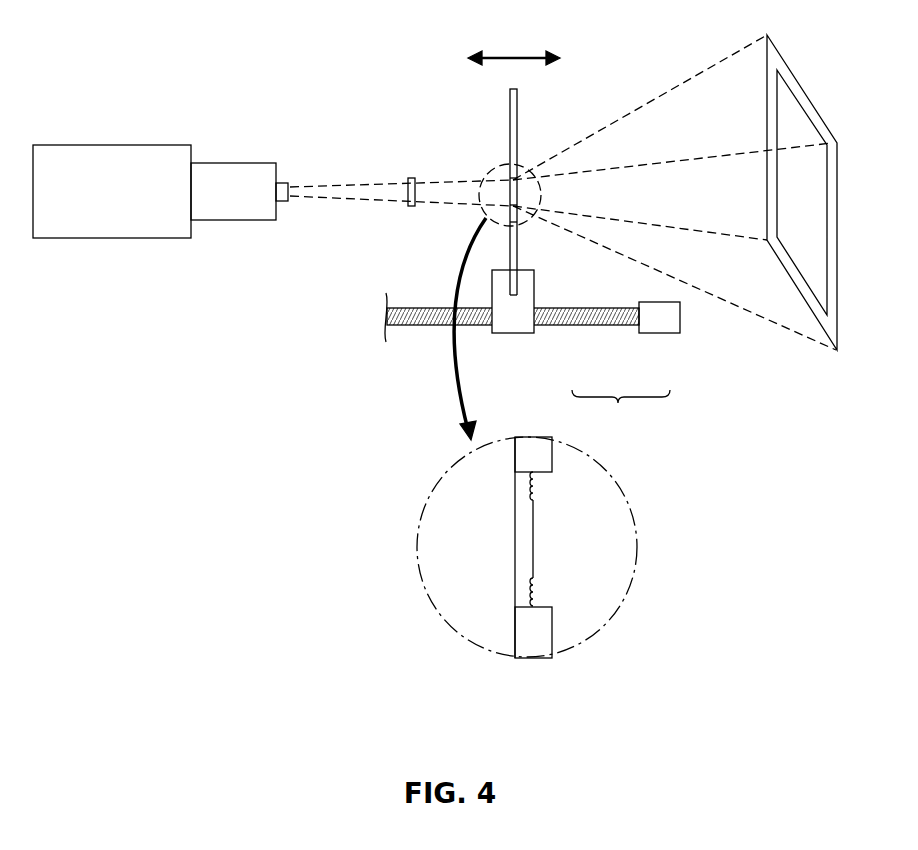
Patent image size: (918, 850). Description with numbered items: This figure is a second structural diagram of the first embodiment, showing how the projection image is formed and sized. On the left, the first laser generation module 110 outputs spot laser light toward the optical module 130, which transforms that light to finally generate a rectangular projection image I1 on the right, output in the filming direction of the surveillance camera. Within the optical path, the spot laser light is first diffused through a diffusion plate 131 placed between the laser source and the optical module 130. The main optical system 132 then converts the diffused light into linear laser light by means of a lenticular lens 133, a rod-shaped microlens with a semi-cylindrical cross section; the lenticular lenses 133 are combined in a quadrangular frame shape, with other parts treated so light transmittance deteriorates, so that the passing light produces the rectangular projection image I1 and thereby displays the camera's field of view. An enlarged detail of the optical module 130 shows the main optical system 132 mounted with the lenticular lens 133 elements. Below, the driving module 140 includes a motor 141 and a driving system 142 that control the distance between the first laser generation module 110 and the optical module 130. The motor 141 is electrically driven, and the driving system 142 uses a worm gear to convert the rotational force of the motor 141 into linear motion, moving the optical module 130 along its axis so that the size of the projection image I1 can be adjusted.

The first laser generation module 110 is at (145, 163).
The rectangular projection image I1 is at (823, 123).
The diffusion plate 131 is at (413, 178).
The optical module 130 is at (566, 98).
The main optical system 132 is at (525, 543).
The lenticular lens 133 is at (537, 592).
The driving module 140 is at (621, 411).
The motor 141 is at (660, 318).
The driving system 142 is at (593, 327).